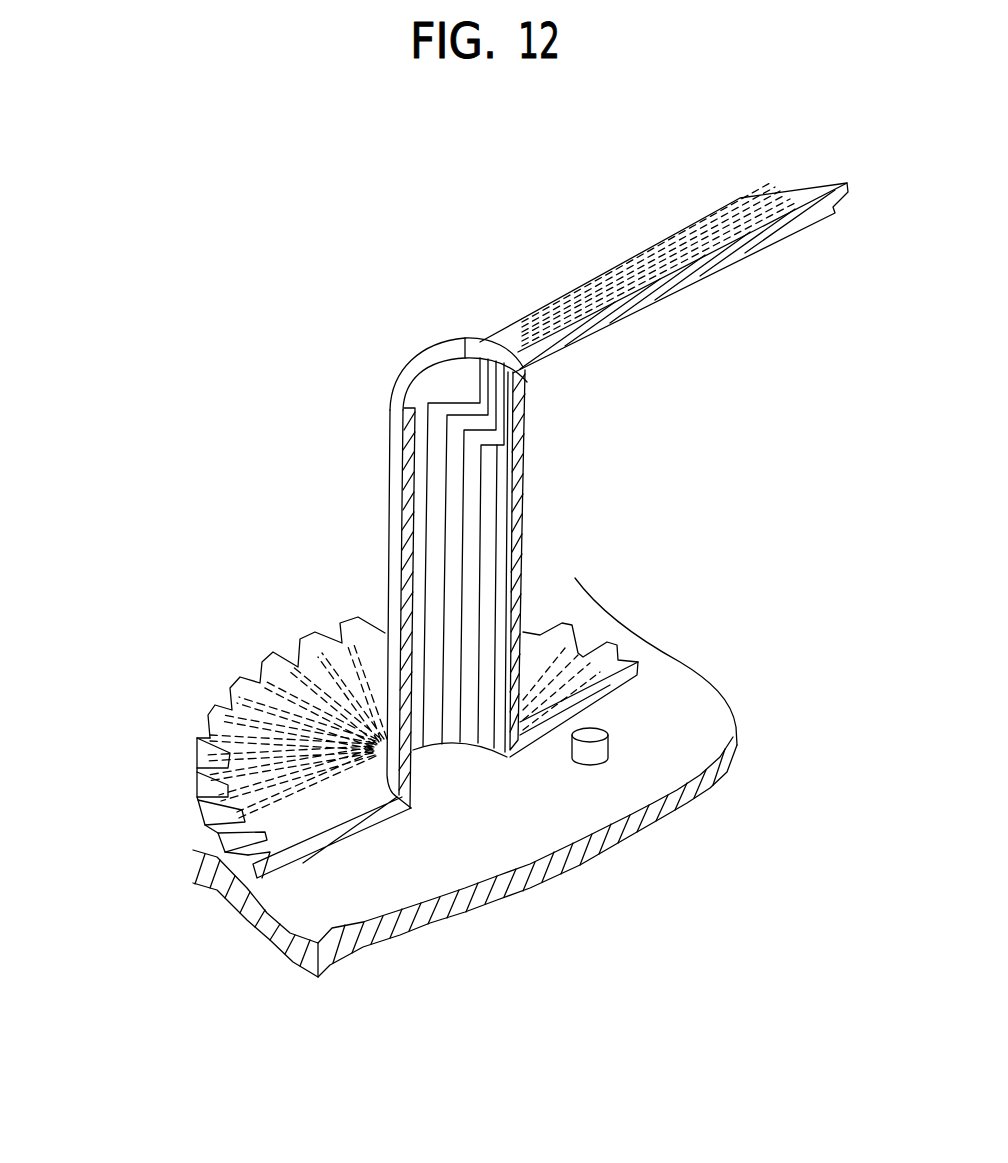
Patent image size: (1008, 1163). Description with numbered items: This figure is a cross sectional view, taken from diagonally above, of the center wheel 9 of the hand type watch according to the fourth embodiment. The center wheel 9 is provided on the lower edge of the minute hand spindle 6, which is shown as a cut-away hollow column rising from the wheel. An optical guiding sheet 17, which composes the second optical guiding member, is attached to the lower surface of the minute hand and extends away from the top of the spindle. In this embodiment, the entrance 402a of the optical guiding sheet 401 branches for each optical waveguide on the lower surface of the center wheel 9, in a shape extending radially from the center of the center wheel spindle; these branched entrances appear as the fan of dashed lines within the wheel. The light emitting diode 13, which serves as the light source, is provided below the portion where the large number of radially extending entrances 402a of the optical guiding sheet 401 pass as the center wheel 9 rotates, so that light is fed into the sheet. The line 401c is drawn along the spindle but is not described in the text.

The optical guiding sheet 17 is at (717, 215).
The minute hand spindle 6 is at (388, 475).
The optical guiding sheet 401 is at (505, 528).
The electrode strips 401c is at (432, 560).
The entrance 402a is at (200, 806).
The center wheel 9 is at (608, 645).
The light emitting diode 13 is at (602, 752).